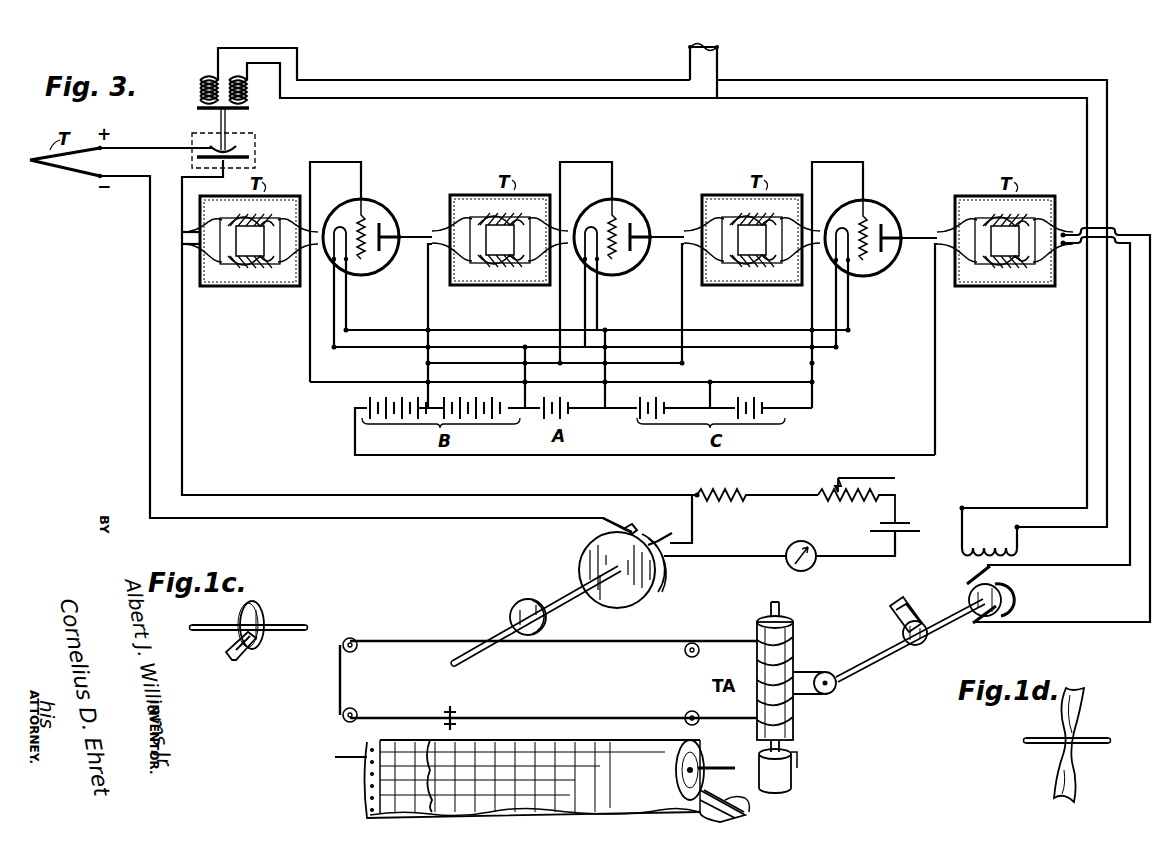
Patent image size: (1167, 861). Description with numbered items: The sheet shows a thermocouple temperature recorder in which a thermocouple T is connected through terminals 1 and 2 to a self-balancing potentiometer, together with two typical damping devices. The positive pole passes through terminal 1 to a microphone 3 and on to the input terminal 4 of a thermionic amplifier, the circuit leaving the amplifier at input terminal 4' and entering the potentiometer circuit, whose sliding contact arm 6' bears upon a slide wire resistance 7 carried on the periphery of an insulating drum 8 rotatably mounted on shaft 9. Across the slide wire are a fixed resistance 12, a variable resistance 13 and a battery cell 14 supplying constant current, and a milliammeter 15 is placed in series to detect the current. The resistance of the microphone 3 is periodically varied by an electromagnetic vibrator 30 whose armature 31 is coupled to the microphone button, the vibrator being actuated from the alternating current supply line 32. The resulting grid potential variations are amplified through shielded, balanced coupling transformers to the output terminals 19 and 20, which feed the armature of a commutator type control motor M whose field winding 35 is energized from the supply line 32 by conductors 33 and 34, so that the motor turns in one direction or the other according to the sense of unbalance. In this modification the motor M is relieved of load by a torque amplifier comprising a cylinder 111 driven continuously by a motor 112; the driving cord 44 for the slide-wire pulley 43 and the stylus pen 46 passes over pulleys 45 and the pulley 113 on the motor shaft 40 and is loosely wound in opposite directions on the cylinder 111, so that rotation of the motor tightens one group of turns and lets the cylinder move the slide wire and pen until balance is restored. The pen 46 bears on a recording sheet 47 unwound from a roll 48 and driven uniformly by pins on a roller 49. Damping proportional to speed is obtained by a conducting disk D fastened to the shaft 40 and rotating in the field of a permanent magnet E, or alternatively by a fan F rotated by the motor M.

In FIG. 3, the terminal 1 is at (150, 136).
In FIG. 3, the terminal 2 is at (147, 178).
In FIG. 3, the microphone 3 is at (248, 150).
In FIG. 3, the input terminal 4 is at (178, 222).
In FIG. 3, the input terminal 4' is at (177, 256).
In FIG. 3, the sliding contact arm 6' is at (647, 520).
In FIG. 3, the slide wire resistance 7 is at (660, 566).
In FIG. 3, the insulating drum 8 is at (626, 600).
In FIG. 3, the shaft 9 is at (569, 600).
In FIG. 3, the fixed resistance 12 is at (728, 496).
In FIG. 3, the variable resistance 13 is at (864, 498).
In FIG. 3, the battery cell 14 is at (896, 524).
In FIG. 3, the milliammeter 15 is at (812, 566).
In FIG. 3, the output terminal 19 is at (1063, 235).
In FIG. 3, the output terminal 20 is at (1063, 243).
In FIG. 3, the electromagnetic vibrator 30 is at (250, 98).
In FIG. 3, the armature 31 is at (252, 120).
In FIG. 3, the alternating current supply line 32 is at (718, 63).
In FIG. 3, the conductor 33 is at (872, 78).
In FIG. 3, the conductor 34 is at (870, 104).
In FIG. 3, the field winding 35 is at (986, 546).
In FIG. 3, the shaft 40 is at (948, 611).
In FIG. 1C, the shaft 40 is at (210, 630).
In FIG. 1D, the shaft 40 is at (1094, 749).
In FIG. 3, the drum 43 is at (512, 605).
In FIG. 3, the endless belt 44 is at (606, 643).
In FIG. 3, the pulleys 45 is at (352, 648).
In FIG. 3, the stylus pen 46 is at (458, 714).
In FIG. 3, the recording sheet 47 is at (517, 779).
In FIG. 3, the roll 48 is at (746, 812).
In FIG. 3, the roller 49 is at (696, 751).
In FIG. 3, the cylinder 111 is at (792, 644).
In FIG. 3, the motor 112 is at (794, 776).
In FIG. 3, the pulley 113 is at (830, 690).
In FIG. 3, the conducting disk D is at (921, 644).
In FIG. 1C, the conducting disk D is at (258, 609).
In FIG. 3, the permanent magnet E is at (906, 600).
In FIG. 1C, the permanent magnet E is at (244, 664).
In FIG. 1D, the fan F is at (1088, 702).
In FIG. 3, the control motor M is at (1003, 598).